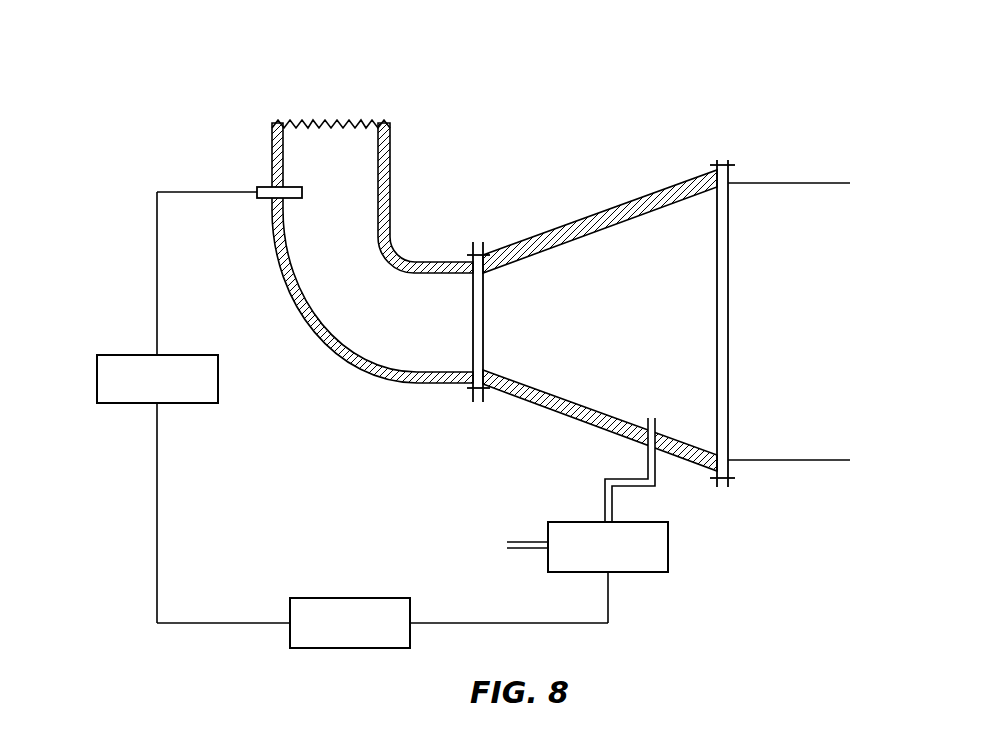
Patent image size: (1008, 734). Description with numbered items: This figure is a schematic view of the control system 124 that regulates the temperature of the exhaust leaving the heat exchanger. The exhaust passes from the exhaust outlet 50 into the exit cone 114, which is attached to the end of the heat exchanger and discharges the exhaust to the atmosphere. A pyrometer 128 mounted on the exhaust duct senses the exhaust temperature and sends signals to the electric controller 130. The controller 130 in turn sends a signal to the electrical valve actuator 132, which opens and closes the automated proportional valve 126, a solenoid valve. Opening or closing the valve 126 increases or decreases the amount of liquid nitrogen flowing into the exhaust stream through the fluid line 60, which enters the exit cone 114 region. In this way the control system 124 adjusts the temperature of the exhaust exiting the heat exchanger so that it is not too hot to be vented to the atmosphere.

The control system 124 is at (486, 84).
The exhaust outlet 50 is at (331, 104).
The pyrometer 128 is at (249, 169).
The exit cone 114 is at (658, 323).
The fluid line 60 is at (603, 470).
The automated proportional valve 126 is at (588, 561).
The electric controller 130 is at (137, 393).
The electrical valve actuator 132 is at (330, 637).